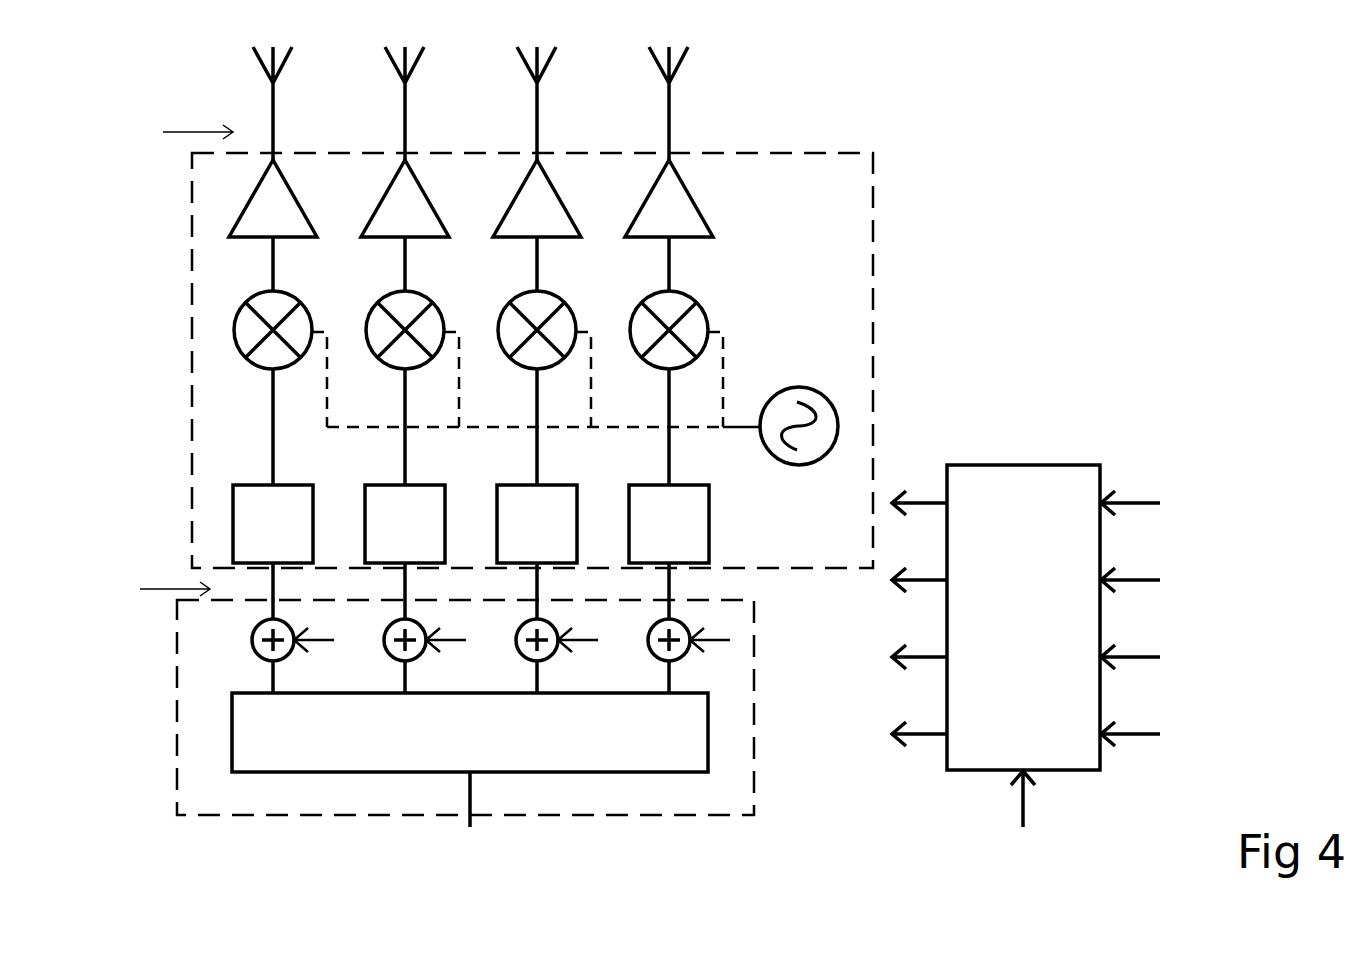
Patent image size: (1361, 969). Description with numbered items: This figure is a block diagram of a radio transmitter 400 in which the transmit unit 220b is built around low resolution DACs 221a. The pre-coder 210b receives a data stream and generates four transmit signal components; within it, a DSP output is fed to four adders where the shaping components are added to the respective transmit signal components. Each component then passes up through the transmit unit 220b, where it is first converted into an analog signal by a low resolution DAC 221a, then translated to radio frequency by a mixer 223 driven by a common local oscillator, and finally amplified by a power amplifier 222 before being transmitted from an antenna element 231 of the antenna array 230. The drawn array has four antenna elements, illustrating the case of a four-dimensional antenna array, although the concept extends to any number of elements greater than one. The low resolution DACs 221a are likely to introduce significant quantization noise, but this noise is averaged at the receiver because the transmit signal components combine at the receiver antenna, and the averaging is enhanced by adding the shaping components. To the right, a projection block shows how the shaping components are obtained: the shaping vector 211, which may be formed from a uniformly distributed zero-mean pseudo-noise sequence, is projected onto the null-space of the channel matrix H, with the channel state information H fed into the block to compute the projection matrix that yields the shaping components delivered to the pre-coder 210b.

The radio transmitter 400 is at (1154, 109).
The antenna array 230 is at (520, 94).
The antenna element 231 is at (221, 54).
The transmit unit 220b is at (519, 323).
The power amplifier 222 is at (572, 178).
The mixer 223 is at (536, 386).
The low resolution DAC 221a is at (212, 467).
The pre-coder 210b is at (465, 733).
The shaping vector 211 is at (1172, 473).